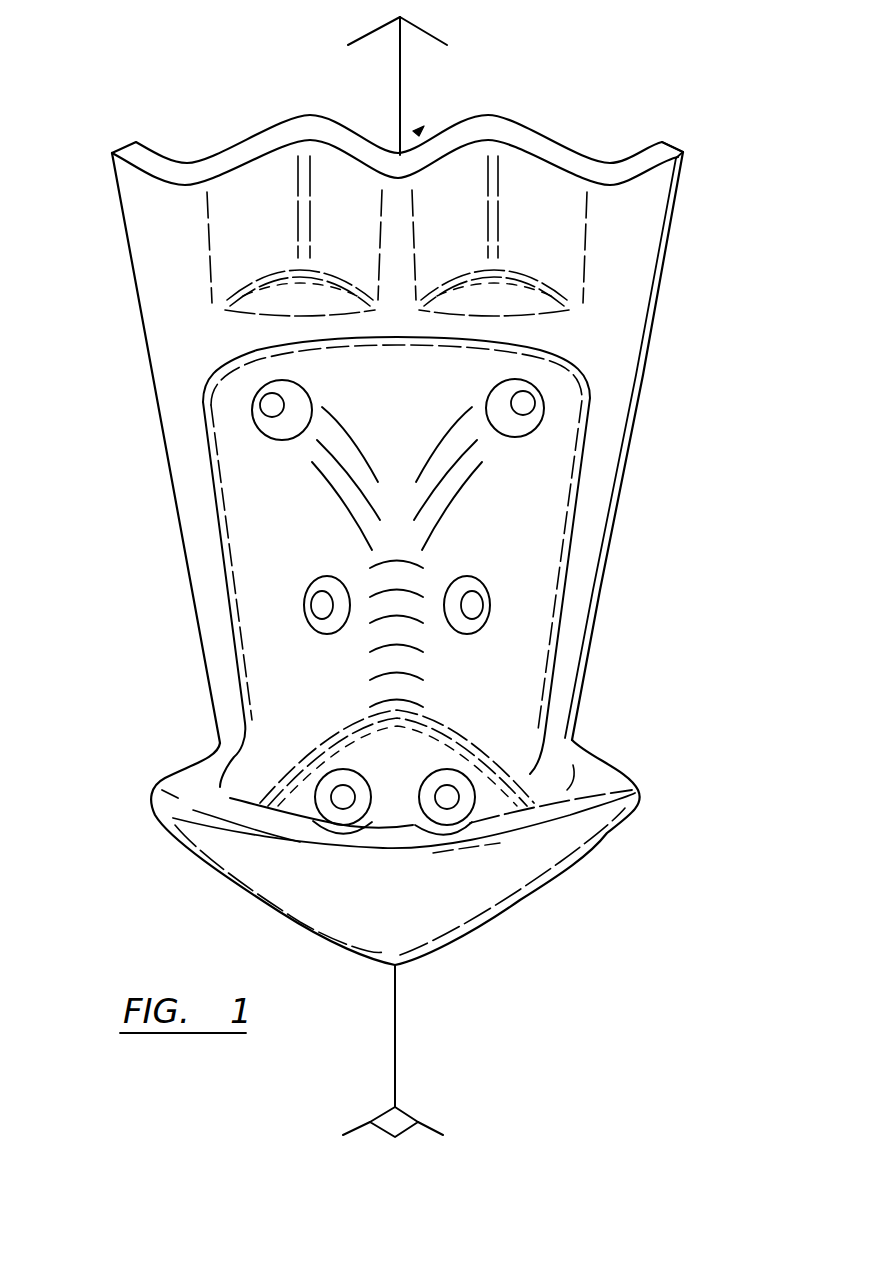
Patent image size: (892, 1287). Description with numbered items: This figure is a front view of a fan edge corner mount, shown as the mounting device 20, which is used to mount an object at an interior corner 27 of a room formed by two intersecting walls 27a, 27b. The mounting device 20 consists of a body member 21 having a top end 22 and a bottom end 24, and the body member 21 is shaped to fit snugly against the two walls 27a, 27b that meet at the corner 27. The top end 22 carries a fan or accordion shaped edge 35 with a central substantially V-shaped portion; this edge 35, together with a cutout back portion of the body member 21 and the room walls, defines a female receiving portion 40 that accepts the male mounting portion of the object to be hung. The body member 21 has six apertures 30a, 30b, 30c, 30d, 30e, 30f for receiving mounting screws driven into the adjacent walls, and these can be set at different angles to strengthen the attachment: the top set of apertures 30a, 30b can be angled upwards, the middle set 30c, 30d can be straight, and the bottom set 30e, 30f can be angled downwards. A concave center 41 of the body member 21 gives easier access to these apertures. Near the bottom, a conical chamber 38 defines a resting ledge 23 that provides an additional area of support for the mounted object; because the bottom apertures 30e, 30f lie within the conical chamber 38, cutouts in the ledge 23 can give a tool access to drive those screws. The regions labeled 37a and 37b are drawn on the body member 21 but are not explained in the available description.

The mounting device 20 is at (706, 373).
The body member 21 is at (622, 515).
The top end 22 is at (672, 140).
The resting ledge 23 is at (580, 838).
The bottom end 24 is at (588, 872).
The corner 27 is at (400, 97).
The intersecting wall 27a is at (374, 108).
The intersecting wall 27b is at (449, 72).
The aperture 30a is at (278, 443).
The aperture 30b is at (525, 438).
The aperture 30c is at (322, 577).
The aperture 30d is at (467, 577).
The aperture 30e is at (340, 769).
The aperture 30f is at (455, 769).
The fan or accordion shaped edge 35 is at (537, 130).
The pocket 37a is at (292, 298).
The pocket 37b is at (503, 298).
The conical chamber 38 is at (521, 777).
The female receiving portion 40 is at (415, 130).
The concave center 41 is at (415, 657).